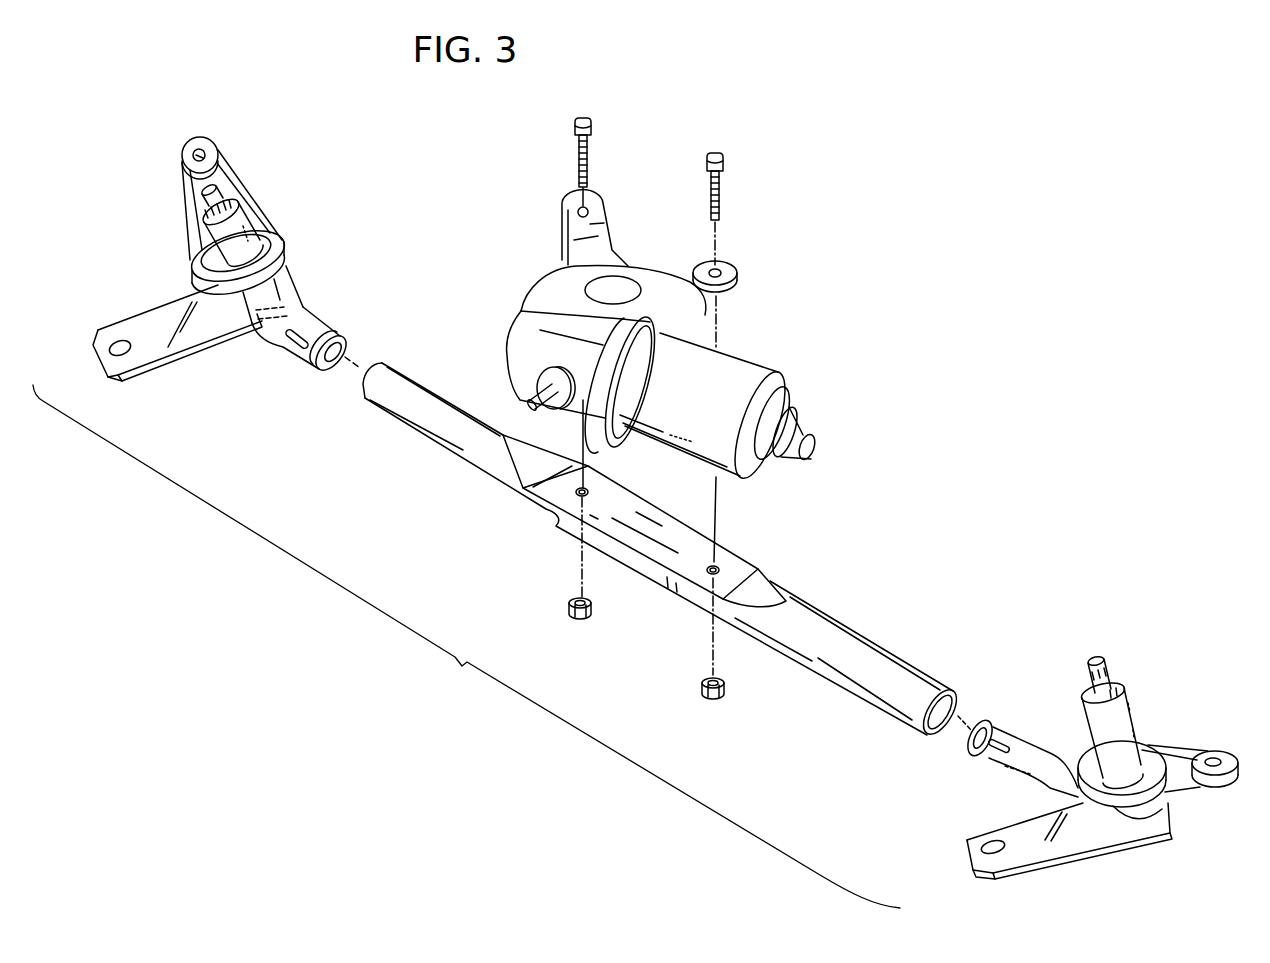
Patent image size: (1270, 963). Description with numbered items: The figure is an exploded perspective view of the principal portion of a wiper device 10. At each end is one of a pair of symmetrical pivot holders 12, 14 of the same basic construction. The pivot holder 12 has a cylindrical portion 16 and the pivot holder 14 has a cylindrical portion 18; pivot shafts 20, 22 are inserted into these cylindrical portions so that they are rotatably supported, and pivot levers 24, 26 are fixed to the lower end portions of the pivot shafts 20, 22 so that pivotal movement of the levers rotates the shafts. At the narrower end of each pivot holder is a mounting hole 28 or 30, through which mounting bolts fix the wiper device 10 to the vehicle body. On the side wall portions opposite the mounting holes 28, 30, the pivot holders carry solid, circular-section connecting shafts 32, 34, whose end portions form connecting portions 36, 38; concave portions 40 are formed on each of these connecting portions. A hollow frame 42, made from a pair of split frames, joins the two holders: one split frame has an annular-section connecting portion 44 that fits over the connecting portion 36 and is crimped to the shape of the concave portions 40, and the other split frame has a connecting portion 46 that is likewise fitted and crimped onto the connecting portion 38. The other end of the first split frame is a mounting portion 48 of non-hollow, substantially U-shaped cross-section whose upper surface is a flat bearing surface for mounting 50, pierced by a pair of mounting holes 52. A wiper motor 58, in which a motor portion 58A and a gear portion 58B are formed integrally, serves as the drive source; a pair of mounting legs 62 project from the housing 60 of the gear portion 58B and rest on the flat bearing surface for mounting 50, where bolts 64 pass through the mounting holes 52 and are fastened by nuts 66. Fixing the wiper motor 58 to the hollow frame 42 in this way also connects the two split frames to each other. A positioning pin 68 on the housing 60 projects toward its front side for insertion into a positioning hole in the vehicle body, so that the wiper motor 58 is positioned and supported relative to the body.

The wiper device 10 is at (743, 147).
The pivot holder 12 is at (270, 220).
The pivot holder 14 is at (1180, 745).
The cylindrical portion 16 is at (293, 247).
The cylindrical portion 18 is at (1129, 690).
The pivot shaft 20 is at (237, 170).
The pivot shaft 22 is at (1096, 658).
The pivot lever 24 is at (177, 357).
The pivot lever 26 is at (977, 837).
The mounting hole 28 is at (199, 152).
The mounting hole 30 is at (1213, 758).
The connecting shaft 32 is at (273, 313).
The connecting shaft 34 is at (1030, 787).
The connecting portion 36 is at (315, 360).
The connecting portion 38 is at (990, 730).
The concave portions 40 is at (303, 334).
The hollow frame 42 is at (425, 442).
The connecting portion 44 is at (657, 529).
The connecting portion 46 is at (923, 710).
The mounting portion 48 is at (653, 545).
The flat bearing surface for mounting 50 is at (673, 550).
The mounting holes 52 is at (573, 513).
The wiper motor 58 is at (689, 331).
The motor portion 58A is at (780, 370).
The gear portion 58B is at (693, 323).
The housing 60 is at (527, 283).
The mounting legs 62 is at (610, 213).
The bolts 64 is at (573, 160).
The nuts 66 is at (573, 617).
The positioning pin 68 is at (532, 395).